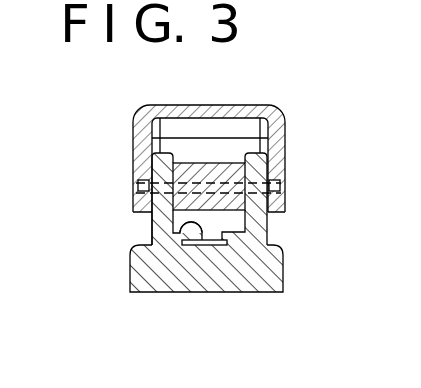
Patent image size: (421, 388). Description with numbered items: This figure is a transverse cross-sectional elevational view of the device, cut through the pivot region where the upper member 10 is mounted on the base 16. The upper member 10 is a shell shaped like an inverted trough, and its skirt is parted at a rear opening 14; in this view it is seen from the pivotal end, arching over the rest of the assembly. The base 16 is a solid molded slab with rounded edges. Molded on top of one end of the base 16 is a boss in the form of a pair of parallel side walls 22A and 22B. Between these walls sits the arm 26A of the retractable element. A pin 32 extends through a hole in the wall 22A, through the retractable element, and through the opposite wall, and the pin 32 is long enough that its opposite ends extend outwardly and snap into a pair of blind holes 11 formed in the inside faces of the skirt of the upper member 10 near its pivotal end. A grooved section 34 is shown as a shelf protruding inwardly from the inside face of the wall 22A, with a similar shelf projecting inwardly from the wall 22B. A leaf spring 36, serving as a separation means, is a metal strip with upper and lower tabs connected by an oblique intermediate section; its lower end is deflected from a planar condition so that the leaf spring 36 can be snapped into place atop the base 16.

The upper member 10 is at (131, 165).
The blind holes 11 is at (284, 190).
The rear opening 14 is at (202, 157).
The base 16 is at (247, 279).
The side wall 22A is at (287, 126).
The side wall 22B is at (159, 105).
The arm 26A is at (151, 222).
The pin 32 is at (228, 167).
The grooved section 34 is at (203, 240).
The leaf spring 36 is at (210, 243).